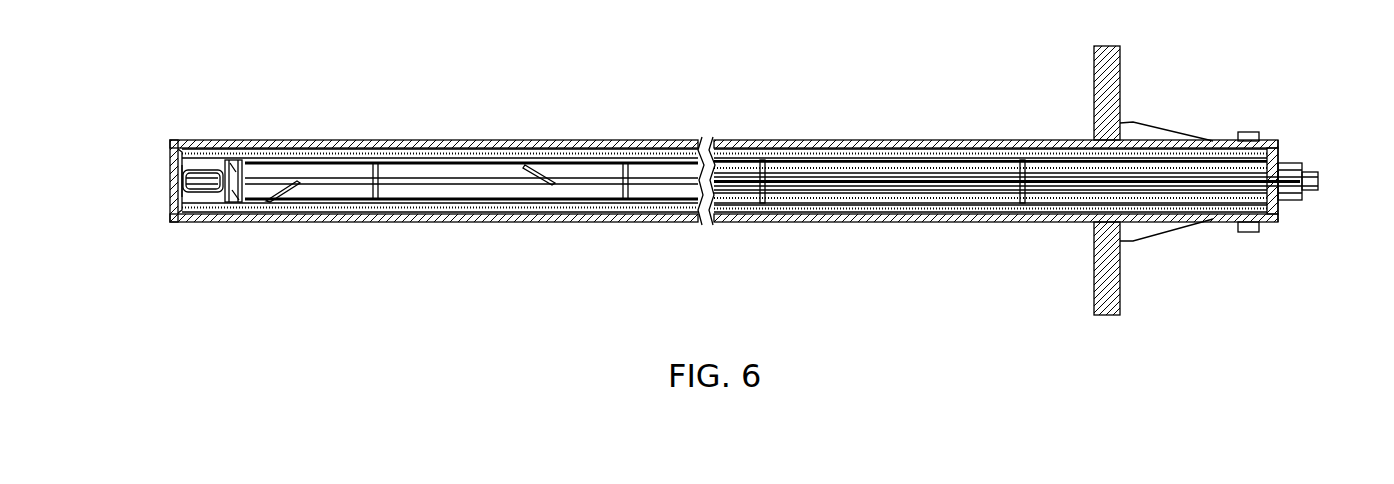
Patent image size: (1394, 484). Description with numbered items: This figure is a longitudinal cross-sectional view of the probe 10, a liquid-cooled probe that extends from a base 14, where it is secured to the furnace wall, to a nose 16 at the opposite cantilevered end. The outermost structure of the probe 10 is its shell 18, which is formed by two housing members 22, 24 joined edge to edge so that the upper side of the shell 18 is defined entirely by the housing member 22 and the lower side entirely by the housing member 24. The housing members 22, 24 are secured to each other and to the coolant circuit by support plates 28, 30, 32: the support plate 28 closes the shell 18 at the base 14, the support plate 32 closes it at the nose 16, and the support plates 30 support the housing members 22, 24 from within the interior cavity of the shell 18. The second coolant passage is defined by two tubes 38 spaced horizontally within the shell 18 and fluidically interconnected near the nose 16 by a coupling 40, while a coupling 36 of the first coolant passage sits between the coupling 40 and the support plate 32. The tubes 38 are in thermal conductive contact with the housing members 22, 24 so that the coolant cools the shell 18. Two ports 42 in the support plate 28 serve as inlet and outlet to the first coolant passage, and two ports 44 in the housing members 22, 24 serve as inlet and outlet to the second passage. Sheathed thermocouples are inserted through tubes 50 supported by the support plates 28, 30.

The probe 10 is at (842, 40).
The base 14 is at (1103, 83).
The nose 16 is at (173, 160).
The shell 18 is at (448, 139).
The housing member 22 is at (918, 146).
The housing member 24 is at (927, 220).
The support plate 28 is at (1277, 158).
The support plate 30 is at (376, 162).
The support plate 32 is at (173, 193).
The coupling 36 is at (204, 172).
The tube 38 is at (327, 156).
The coupling 40 is at (235, 203).
The port 42 is at (1312, 185).
The port 44 is at (1248, 132).
The tube 50 is at (815, 192).